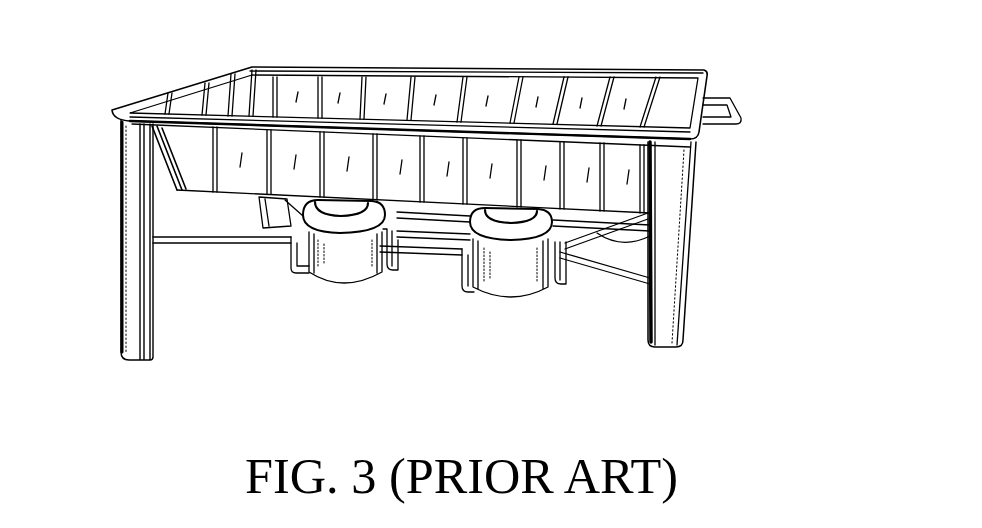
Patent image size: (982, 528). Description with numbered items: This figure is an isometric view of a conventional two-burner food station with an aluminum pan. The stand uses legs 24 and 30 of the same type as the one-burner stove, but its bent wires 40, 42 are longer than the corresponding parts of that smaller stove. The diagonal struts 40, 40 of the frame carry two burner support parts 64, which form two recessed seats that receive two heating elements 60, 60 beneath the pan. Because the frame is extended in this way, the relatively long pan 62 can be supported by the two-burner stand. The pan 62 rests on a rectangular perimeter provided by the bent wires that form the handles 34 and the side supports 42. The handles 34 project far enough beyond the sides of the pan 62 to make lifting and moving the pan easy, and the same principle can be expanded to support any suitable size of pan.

The leg 24 is at (122, 263).
The leg 30 is at (687, 263).
The handle 34 is at (742, 113).
The bent wire 40 is at (215, 245).
The side support 42 is at (183, 120).
The heating element 60 is at (335, 285).
The pan 62 is at (424, 95).
The burner support part 64 is at (290, 257).